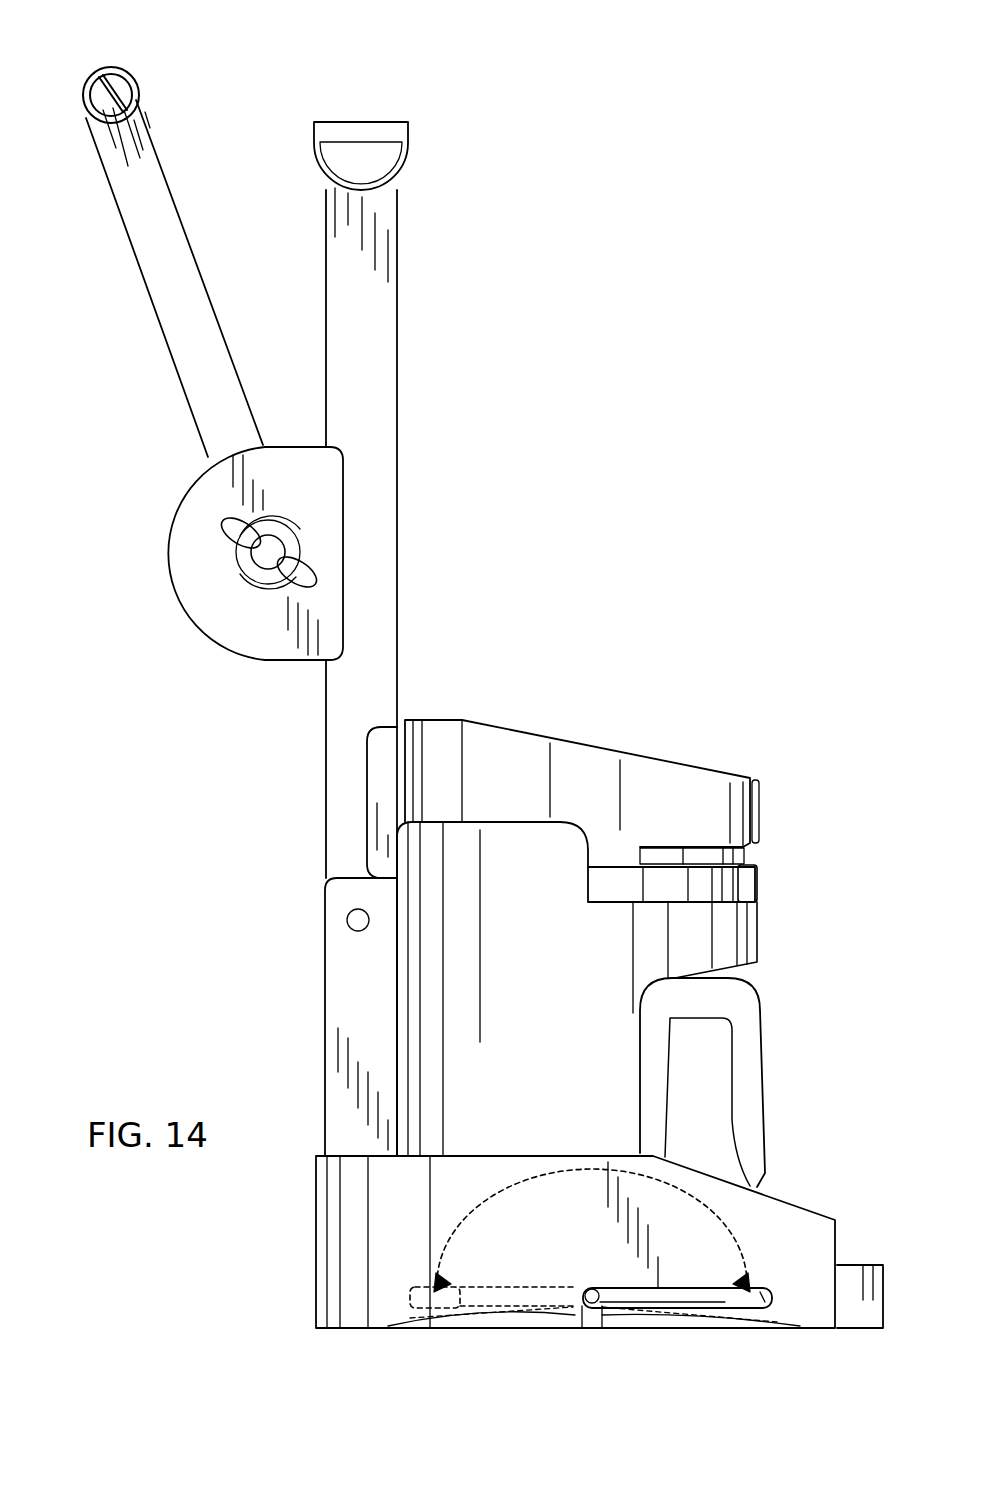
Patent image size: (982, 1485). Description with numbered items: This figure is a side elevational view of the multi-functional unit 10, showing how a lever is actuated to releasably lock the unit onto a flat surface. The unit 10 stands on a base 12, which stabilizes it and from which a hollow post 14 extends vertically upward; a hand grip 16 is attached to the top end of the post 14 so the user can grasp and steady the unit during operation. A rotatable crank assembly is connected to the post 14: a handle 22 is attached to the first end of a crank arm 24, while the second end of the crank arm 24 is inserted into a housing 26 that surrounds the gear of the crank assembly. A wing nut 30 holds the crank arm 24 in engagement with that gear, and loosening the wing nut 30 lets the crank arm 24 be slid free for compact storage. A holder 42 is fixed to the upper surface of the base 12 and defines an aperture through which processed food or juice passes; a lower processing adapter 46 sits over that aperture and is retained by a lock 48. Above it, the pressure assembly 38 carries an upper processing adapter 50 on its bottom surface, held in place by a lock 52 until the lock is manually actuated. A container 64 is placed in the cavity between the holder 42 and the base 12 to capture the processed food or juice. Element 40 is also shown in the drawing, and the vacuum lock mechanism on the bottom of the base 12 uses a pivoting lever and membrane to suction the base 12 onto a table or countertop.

The multi-functional unit 10 is at (580, 272).
The base 12 is at (327, 1222).
The post 14 is at (388, 218).
The hand grip 16 is at (370, 128).
The handle 22 is at (124, 67).
The crank arm 24 is at (132, 244).
The housing 26 is at (172, 545).
The wing nut 30 is at (267, 560).
The pressure assembly 38 is at (528, 730).
The clamp sleeve 40 is at (383, 745).
The holder 42 is at (527, 1017).
The lower processing adapter 46 is at (622, 885).
The lock 48 is at (748, 882).
The upper processing adapter 50 is at (722, 856).
The lock 52 is at (758, 780).
The container 64 is at (740, 1000).